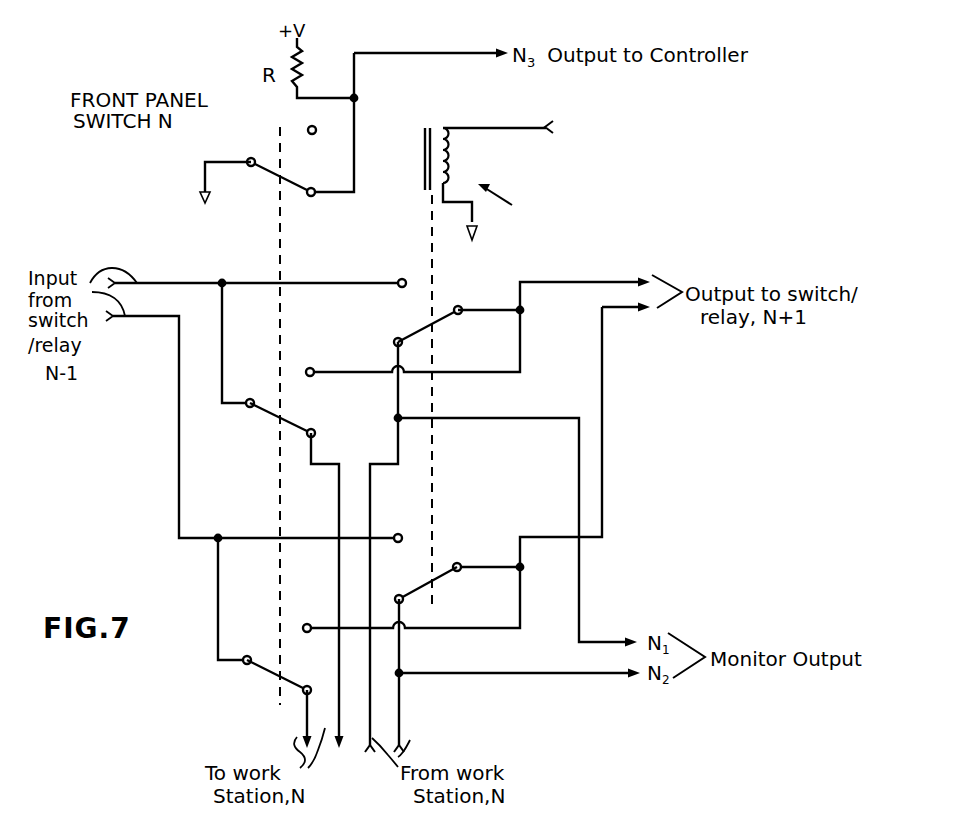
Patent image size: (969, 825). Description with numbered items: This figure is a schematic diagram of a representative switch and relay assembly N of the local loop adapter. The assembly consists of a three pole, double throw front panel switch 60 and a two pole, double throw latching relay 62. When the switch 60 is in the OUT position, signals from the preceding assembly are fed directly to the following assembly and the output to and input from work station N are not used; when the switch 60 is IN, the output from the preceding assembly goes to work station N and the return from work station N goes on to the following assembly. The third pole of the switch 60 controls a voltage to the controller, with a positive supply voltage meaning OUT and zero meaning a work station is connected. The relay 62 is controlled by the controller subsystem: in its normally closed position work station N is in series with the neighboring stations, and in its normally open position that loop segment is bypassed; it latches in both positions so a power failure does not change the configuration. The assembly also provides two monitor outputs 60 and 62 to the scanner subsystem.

The 3 pole, double throw switch 60 is at (278, 258).
The double pole relay 62 is at (431, 256).
The switch and relay assembly N is at (708, 212).